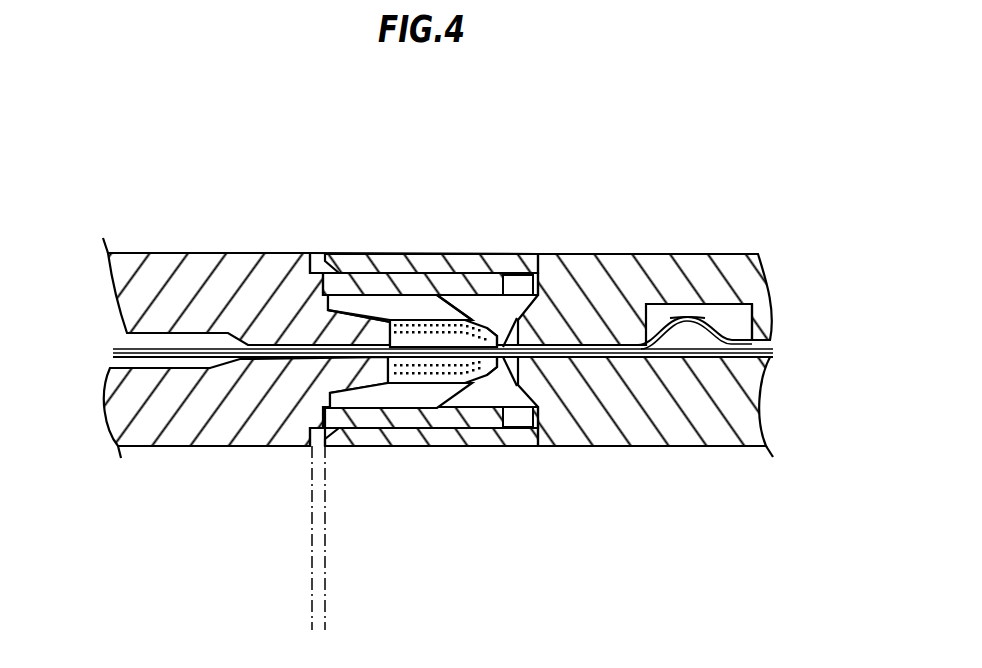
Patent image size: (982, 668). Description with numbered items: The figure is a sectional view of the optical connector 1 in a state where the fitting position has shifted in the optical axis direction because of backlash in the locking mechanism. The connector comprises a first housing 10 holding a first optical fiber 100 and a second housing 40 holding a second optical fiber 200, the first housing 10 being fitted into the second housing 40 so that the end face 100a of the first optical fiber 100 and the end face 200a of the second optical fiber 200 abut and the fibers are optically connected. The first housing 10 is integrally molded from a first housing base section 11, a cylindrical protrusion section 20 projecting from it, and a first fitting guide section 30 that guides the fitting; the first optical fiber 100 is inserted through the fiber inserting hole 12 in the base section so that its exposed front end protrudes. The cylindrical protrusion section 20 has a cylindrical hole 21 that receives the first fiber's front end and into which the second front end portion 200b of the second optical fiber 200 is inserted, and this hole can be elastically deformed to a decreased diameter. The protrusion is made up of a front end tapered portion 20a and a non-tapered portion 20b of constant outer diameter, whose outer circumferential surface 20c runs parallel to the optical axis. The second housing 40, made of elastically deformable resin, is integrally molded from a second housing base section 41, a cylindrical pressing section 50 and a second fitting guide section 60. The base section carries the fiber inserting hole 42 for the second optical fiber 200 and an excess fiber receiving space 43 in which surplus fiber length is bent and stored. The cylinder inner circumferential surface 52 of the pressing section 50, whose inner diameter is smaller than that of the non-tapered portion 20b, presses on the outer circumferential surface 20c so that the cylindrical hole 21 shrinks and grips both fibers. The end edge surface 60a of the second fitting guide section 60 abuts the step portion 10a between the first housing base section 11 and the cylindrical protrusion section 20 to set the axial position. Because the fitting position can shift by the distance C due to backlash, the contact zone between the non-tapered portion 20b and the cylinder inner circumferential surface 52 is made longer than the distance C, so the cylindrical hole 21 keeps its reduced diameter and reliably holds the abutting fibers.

The optical connector 1 is at (441, 186).
The first housing 10 is at (235, 248).
The step portion 10a is at (313, 253).
The first housing base section 11 is at (140, 252).
The fiber inserting hole 12 is at (170, 361).
The first optical fiber 100 is at (170, 345).
The end face 100a is at (578, 358).
The cylindrical protrusion section 20 is at (408, 316).
The front end tapered portion 20a is at (490, 318).
The non-tapered portion 20b is at (394, 316).
The outer circumferential surface 20c is at (470, 300).
The first fitting guide section 30 is at (432, 310).
The second housing 40 is at (575, 247).
The second housing base section 41 is at (743, 446).
The fiber inserting hole 42 is at (615, 357).
The excess fiber receiving space 43 is at (760, 295).
The second optical fiber 200 is at (735, 332).
The end face 200a is at (422, 446).
The second front end portion 200b is at (702, 313).
The cylindrical hole 21 is at (502, 366).
The pressing section 50 is at (461, 393).
The cylinder inner circumferential surface 52 is at (498, 343).
The second fitting guide section 60 is at (408, 446).
The end edge surface 60a is at (306, 446).
The distance C is at (252, 572).